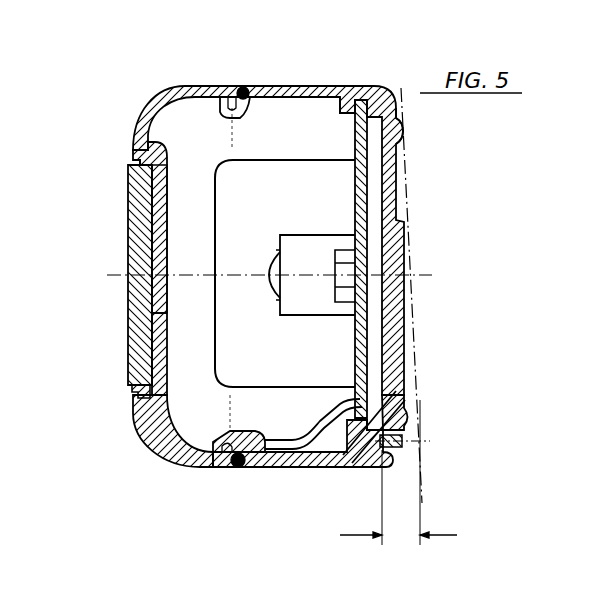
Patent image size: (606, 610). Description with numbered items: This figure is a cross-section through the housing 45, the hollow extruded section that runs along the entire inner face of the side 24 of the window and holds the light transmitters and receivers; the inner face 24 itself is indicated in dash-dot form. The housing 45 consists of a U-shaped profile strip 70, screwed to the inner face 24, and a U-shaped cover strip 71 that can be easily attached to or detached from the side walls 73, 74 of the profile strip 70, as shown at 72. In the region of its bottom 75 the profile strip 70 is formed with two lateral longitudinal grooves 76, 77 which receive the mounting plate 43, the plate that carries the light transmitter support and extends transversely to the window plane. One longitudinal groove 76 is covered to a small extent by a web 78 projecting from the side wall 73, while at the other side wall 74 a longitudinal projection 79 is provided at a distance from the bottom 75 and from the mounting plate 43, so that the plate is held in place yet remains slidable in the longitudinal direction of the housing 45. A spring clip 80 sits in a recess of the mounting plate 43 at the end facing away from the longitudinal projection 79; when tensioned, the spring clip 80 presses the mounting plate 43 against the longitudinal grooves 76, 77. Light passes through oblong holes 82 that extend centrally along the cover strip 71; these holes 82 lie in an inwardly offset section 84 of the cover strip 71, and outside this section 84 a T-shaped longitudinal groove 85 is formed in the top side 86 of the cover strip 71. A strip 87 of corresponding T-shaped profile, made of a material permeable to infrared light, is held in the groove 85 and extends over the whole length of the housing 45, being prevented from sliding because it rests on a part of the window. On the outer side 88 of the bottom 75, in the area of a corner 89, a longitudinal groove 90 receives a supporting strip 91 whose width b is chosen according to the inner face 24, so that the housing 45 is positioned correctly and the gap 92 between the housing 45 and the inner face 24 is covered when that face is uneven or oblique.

The inner face of the side 24 is at (412, 262).
The mounting plate 43 is at (361, 189).
The housing 45 is at (213, 82).
The U-shaped profile strip 70 is at (313, 93).
The U-shaped cover strip 71 is at (152, 107).
The attachment of the cover strip 72 is at (238, 83).
The side wall 73 is at (289, 91).
The side wall 74 is at (287, 458).
The bottom 75 is at (387, 348).
The longitudinal groove 76 is at (368, 104).
The longitudinal groove 77 is at (357, 420).
The web 78 is at (348, 107).
The longitudinal projection 79 is at (257, 442).
The spring clip 80 is at (311, 430).
The oblong holes 82 is at (159, 257).
The inwardly offset section 84 is at (158, 193).
The T-shaped longitudinal groove 85 is at (138, 162).
The top side 86 is at (137, 404).
The strip 87 is at (137, 310).
The outer side 88 is at (398, 395).
The corner 89 is at (396, 457).
The longitudinal groove 90 is at (373, 440).
The supporting strip 91 is at (410, 438).
The gap 92 is at (408, 417).